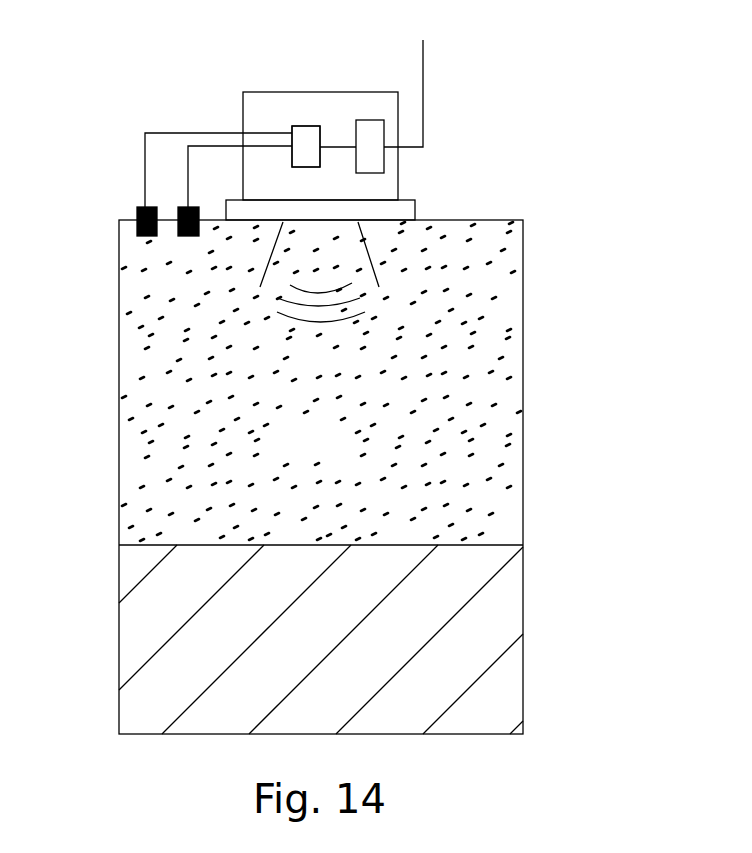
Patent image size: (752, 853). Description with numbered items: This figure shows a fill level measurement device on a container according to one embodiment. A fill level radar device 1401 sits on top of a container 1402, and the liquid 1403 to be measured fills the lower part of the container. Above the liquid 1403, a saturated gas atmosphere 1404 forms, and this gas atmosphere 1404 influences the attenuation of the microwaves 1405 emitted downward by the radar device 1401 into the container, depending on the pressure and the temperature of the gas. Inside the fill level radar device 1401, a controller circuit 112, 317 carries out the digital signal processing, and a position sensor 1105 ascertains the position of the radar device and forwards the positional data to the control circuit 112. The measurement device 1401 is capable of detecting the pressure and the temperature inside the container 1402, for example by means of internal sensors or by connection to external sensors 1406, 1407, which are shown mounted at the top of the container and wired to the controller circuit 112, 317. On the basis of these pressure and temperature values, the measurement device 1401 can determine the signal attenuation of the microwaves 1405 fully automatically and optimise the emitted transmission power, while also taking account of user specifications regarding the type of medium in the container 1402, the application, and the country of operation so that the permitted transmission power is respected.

The control circuit 112 is at (286, 85).
The controller circuit 317 is at (305, 126).
The position sensor 1105 is at (372, 120).
The fill level radar device 1401 is at (398, 168).
The container 1402 is at (523, 283).
The liquid 1403 is at (495, 607).
The saturated gas atmosphere 1404 is at (495, 395).
The microwaves 1405 is at (318, 323).
The external sensor 1406 is at (147, 237).
The external sensor 1407 is at (192, 237).